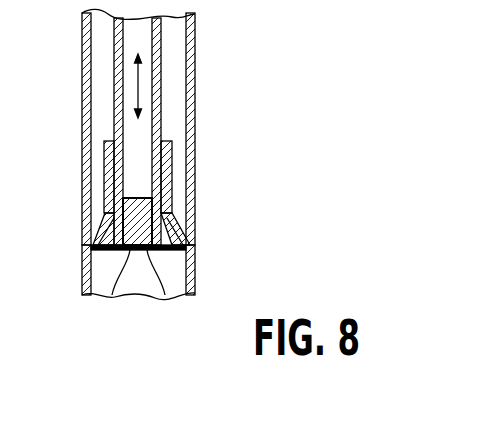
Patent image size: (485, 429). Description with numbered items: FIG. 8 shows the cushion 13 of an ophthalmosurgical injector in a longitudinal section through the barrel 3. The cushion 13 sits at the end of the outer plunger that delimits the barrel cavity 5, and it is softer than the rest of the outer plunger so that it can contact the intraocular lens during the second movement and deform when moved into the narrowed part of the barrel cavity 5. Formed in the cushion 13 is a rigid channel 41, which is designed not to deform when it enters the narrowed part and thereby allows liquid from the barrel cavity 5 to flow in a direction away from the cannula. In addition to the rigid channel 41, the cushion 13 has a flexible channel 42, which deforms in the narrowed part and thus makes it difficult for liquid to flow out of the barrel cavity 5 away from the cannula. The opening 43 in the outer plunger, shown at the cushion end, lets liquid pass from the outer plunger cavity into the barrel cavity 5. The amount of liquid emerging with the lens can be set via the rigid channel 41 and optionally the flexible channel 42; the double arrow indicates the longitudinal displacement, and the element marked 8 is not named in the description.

The barrel 3 is at (195, 108).
The inner tube 8 is at (158, 57).
The barrel cavity 5 is at (172, 280).
The cushion 13 is at (100, 220).
The rigid channel 41 is at (155, 213).
The flexible channel 42 is at (120, 210).
The opening 43 is at (112, 297).